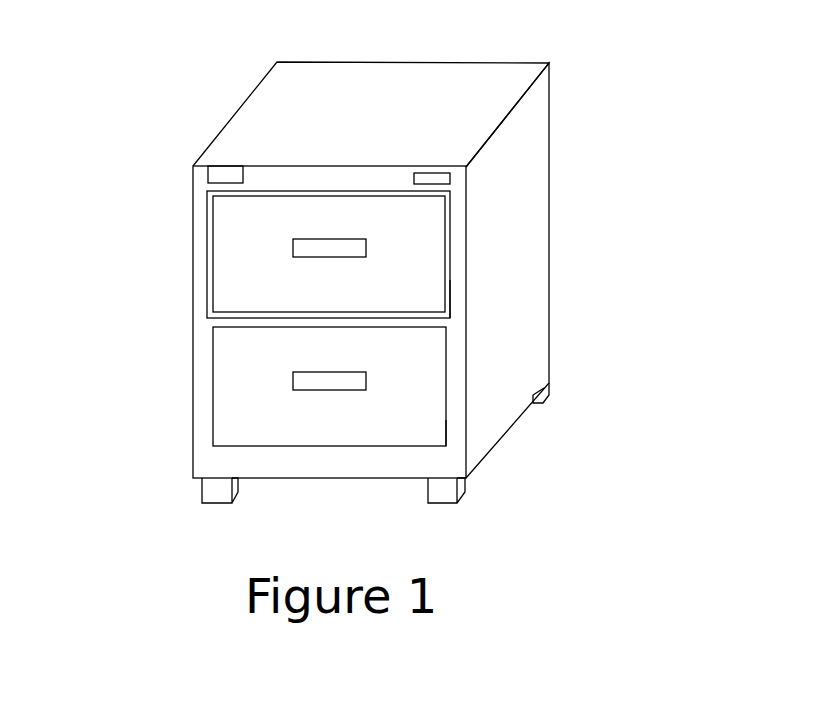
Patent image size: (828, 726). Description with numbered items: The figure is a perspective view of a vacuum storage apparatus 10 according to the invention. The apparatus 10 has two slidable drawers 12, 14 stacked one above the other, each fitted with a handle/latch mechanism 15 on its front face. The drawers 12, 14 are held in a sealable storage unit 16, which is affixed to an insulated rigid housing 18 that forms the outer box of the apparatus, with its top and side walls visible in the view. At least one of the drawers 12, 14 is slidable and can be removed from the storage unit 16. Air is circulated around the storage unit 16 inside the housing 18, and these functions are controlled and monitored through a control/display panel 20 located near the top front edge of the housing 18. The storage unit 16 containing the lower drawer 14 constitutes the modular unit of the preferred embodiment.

The vacuum storage apparatus 10 is at (378, 251).
The slidable drawer 12 is at (228, 270).
The slidable drawer 14 is at (228, 403).
The handle/latch mechanism 15 is at (366, 248).
The sealable storage unit 16 is at (450, 285).
The insulated rigid housing 18 is at (535, 176).
The control/display panel 20 is at (439, 178).